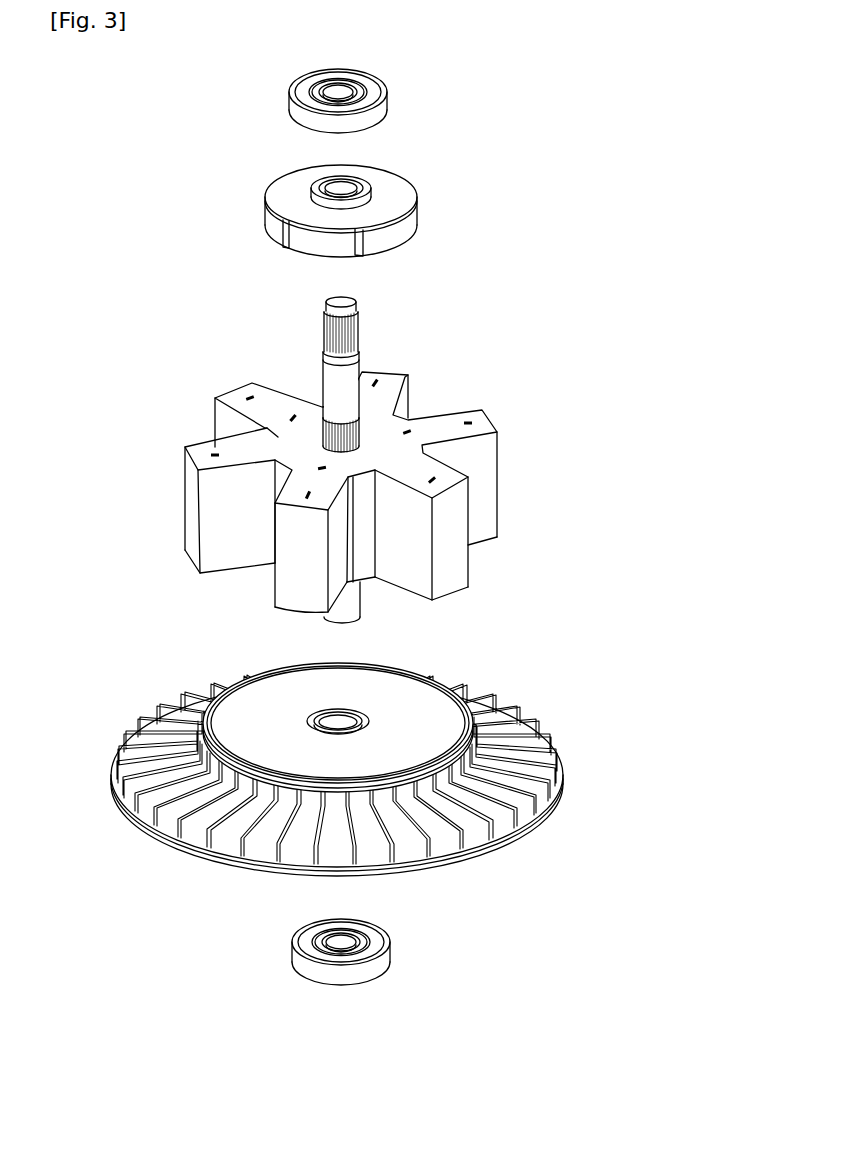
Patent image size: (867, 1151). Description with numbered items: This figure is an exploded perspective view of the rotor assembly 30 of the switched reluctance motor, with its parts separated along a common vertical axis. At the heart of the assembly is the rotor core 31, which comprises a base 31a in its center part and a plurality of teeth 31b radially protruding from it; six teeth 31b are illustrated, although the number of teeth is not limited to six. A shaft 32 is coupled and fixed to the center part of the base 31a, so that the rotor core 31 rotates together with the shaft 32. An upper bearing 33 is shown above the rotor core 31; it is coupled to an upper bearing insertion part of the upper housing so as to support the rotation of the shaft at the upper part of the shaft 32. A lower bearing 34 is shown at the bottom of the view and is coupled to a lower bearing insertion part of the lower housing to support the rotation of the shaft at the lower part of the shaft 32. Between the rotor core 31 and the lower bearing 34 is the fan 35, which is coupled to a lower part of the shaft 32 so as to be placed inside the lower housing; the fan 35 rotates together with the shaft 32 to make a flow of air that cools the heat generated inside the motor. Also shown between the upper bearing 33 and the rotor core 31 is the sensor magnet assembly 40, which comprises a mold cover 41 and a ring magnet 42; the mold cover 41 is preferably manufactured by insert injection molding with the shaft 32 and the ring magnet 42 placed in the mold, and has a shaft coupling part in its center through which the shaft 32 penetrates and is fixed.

The rotor assembly 30 is at (290, 460).
The rotor core 31 is at (302, 487).
The base 31a is at (265, 428).
The teeth 31b is at (197, 457).
The shaft 32 is at (330, 387).
The upper bearing 33 is at (373, 85).
The lower bearing 34 is at (388, 958).
The fan 35 is at (425, 695).
The sensor magnet assembly 40 is at (312, 212).
The mold cover 41 is at (395, 188).
The ring magnet 42 is at (368, 243).